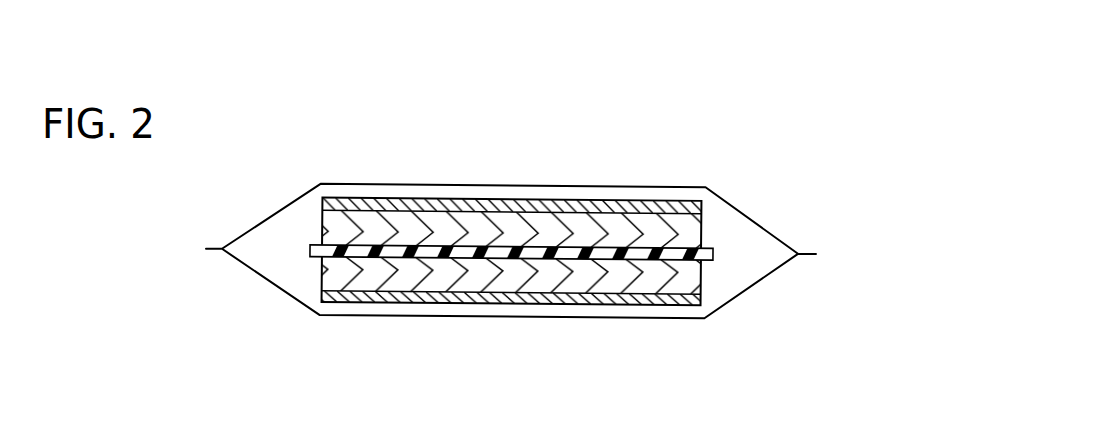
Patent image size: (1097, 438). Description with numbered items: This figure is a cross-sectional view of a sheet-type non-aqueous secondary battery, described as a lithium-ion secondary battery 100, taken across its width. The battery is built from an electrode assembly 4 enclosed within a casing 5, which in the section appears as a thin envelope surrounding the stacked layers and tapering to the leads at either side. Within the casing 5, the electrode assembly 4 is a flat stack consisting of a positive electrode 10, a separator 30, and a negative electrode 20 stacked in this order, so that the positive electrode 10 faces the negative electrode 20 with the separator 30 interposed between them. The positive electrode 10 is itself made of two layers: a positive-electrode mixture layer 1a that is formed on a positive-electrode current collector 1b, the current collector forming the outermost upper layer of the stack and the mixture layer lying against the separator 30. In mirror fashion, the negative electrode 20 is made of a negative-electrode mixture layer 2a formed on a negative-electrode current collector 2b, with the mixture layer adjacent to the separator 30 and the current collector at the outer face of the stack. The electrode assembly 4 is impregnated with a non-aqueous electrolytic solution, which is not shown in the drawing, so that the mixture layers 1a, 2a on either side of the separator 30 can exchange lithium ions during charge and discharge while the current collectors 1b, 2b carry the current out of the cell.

The lithium-ion secondary battery 100 is at (806, 96).
The positive electrode 10 is at (545, 137).
The positive-electrode mixture layer 1a is at (455, 232).
The positive-electrode current collector 1b is at (512, 209).
The negative electrode 20 is at (502, 367).
The negative-electrode mixture layer 2a is at (492, 278).
The negative-electrode current collector 2b is at (433, 296).
The separator 30 is at (605, 253).
The electrode assembly 4 is at (712, 242).
The casing 5 is at (745, 293).